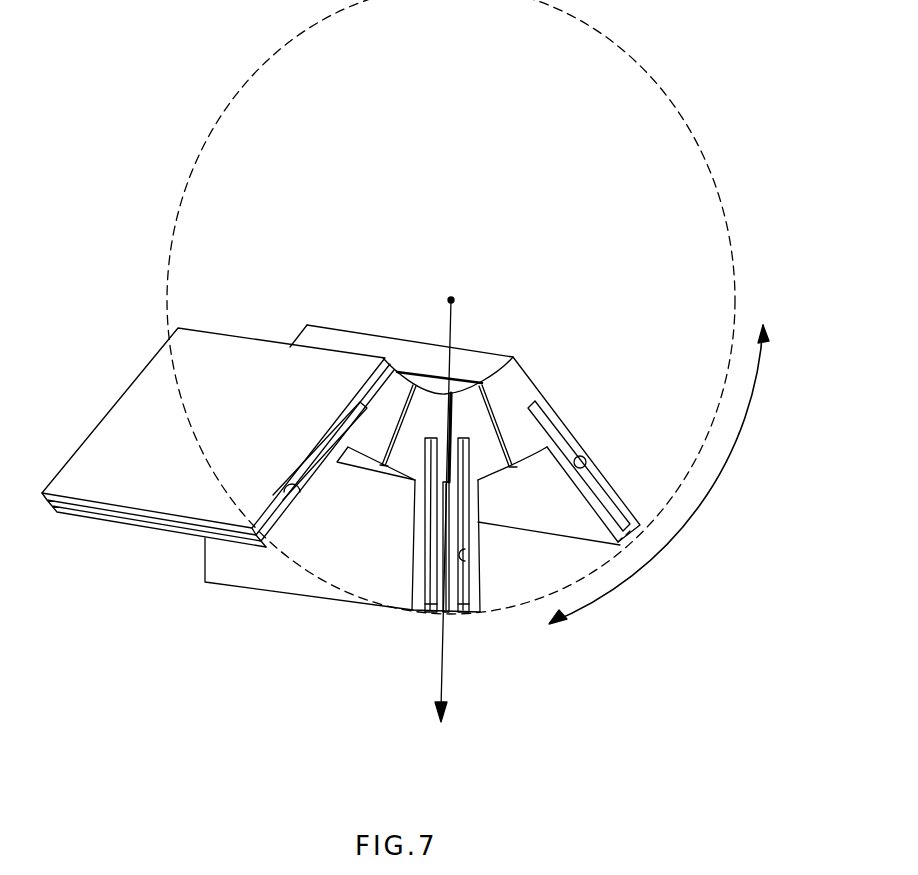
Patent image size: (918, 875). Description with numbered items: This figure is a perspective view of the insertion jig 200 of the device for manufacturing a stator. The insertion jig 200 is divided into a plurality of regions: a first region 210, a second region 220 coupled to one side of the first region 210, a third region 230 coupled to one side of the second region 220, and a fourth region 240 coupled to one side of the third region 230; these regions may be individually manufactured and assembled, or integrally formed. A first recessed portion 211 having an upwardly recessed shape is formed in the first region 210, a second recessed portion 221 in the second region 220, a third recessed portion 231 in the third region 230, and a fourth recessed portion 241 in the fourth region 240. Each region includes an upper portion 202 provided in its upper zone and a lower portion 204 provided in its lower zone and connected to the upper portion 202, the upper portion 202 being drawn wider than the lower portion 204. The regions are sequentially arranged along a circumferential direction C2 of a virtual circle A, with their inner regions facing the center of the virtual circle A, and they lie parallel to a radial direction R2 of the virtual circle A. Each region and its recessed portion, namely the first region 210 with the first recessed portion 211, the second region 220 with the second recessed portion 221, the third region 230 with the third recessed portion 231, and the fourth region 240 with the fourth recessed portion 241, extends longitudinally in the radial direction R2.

The insertion jig 200 is at (327, 281).
The upper portion 202 is at (402, 462).
The lower portion 204 is at (245, 572).
The first region 210 is at (485, 433).
The first recessed portion 211 is at (590, 455).
The second region 220 is at (463, 397).
The second recessed portion 221 is at (470, 560).
The third region 230 is at (430, 398).
The third recessed portion 231 is at (430, 567).
The fourth region 240 is at (218, 467).
The fourth recessed portion 241 is at (282, 503).
The virtual circle A is at (716, 178).
The circumferential direction C2 is at (700, 504).
The radial direction R2 is at (452, 323).